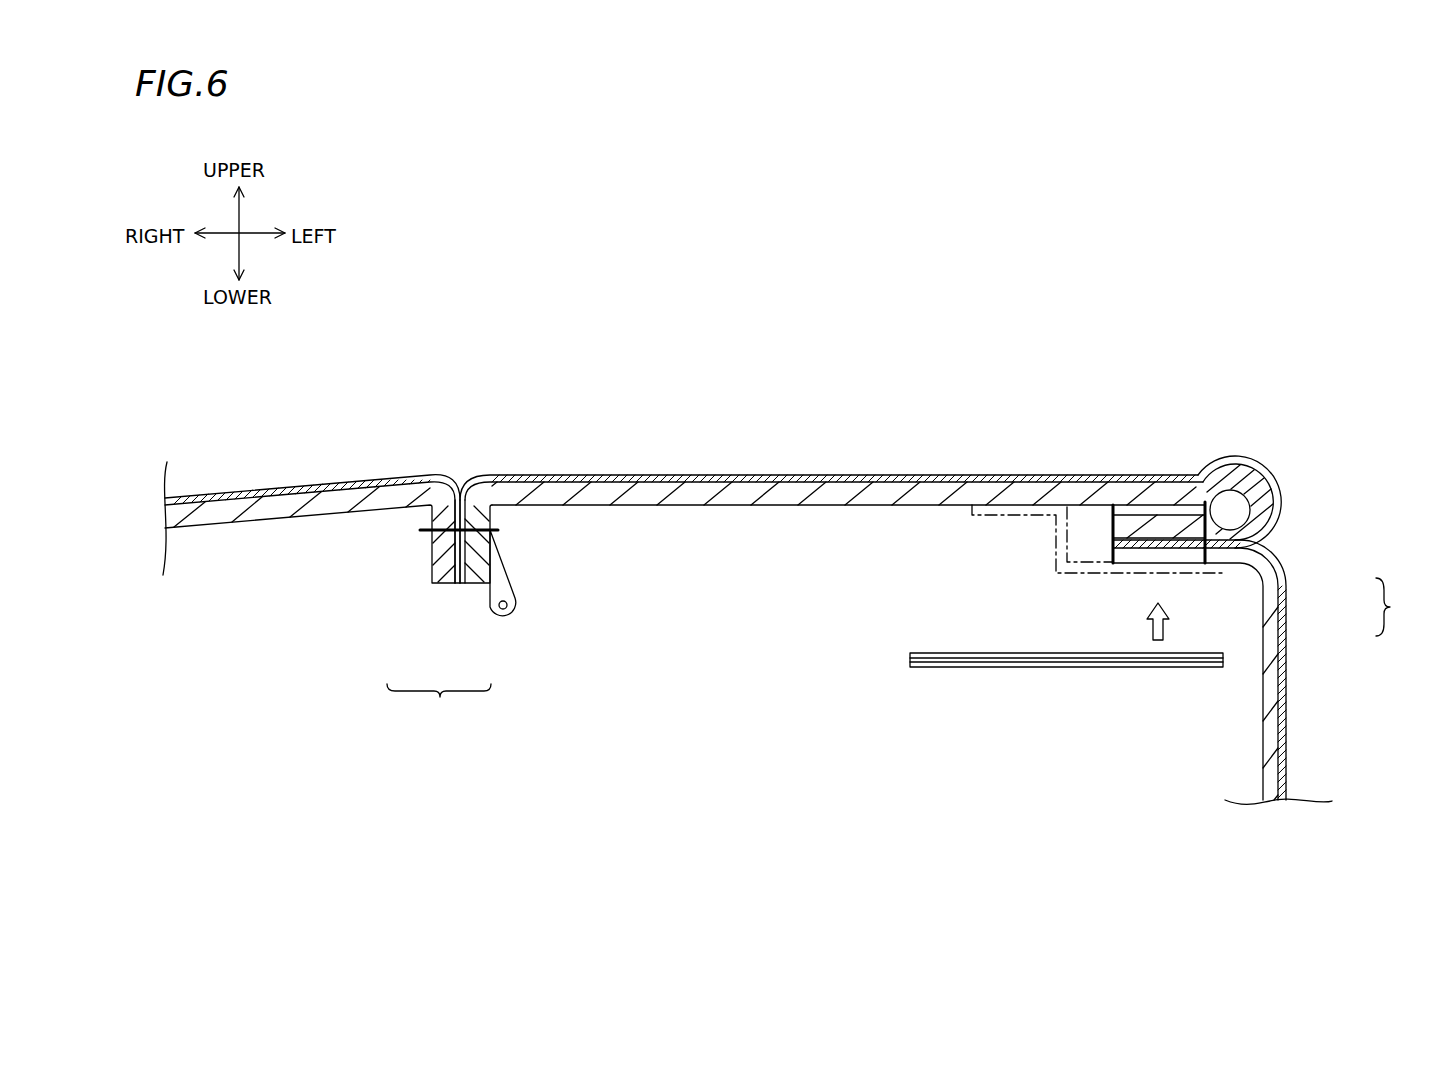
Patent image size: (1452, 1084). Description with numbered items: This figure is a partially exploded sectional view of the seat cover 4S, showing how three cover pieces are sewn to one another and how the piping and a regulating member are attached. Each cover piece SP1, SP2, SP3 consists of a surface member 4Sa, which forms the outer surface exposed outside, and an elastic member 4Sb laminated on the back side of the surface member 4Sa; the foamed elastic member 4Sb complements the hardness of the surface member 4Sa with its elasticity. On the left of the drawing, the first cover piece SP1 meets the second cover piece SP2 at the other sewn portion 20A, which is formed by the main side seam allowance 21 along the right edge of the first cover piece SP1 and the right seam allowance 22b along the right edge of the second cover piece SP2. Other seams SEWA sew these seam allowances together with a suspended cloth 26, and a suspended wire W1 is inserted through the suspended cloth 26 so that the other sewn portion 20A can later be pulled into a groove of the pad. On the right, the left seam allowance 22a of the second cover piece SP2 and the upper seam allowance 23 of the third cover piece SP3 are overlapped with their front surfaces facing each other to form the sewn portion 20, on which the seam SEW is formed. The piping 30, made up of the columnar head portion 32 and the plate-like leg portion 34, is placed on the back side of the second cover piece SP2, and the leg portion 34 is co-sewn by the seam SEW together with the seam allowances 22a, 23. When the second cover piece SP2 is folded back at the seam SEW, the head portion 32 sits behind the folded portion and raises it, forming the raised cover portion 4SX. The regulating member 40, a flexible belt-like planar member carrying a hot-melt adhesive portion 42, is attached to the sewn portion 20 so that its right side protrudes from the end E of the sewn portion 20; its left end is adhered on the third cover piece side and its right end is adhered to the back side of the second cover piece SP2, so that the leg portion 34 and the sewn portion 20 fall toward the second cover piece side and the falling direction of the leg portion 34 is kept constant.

The seat cover 4S is at (803, 588).
The surface member 4Sa is at (283, 481).
The elastic member 4Sb is at (223, 506).
The first cover piece SP1 is at (340, 464).
The second cover piece SP2 is at (853, 464).
The third cover piece SP3 is at (1298, 708).
The raised cover portion 4SX is at (1284, 474).
The piping 30 is at (1265, 505).
The head portion 32 is at (1233, 508).
The seam SEW is at (1193, 473).
The leg portion 34 is at (1150, 500).
The left seam allowance 22a is at (1133, 525).
The upper seam allowance 23 is at (1182, 555).
The sewn portion 20 is at (1394, 607).
The end of the sewn portion E is at (1113, 527).
The regulating member 40 is at (1008, 680).
The adhesive portion 42 is at (960, 651).
The suspended cloth 26 is at (517, 568).
The suspended wire W1 is at (504, 618).
The other seams SEWA is at (427, 533).
The main side seam allowance 21 is at (442, 573).
The right seam allowance 22b is at (478, 573).
The other sewn portion 20A is at (439, 702).